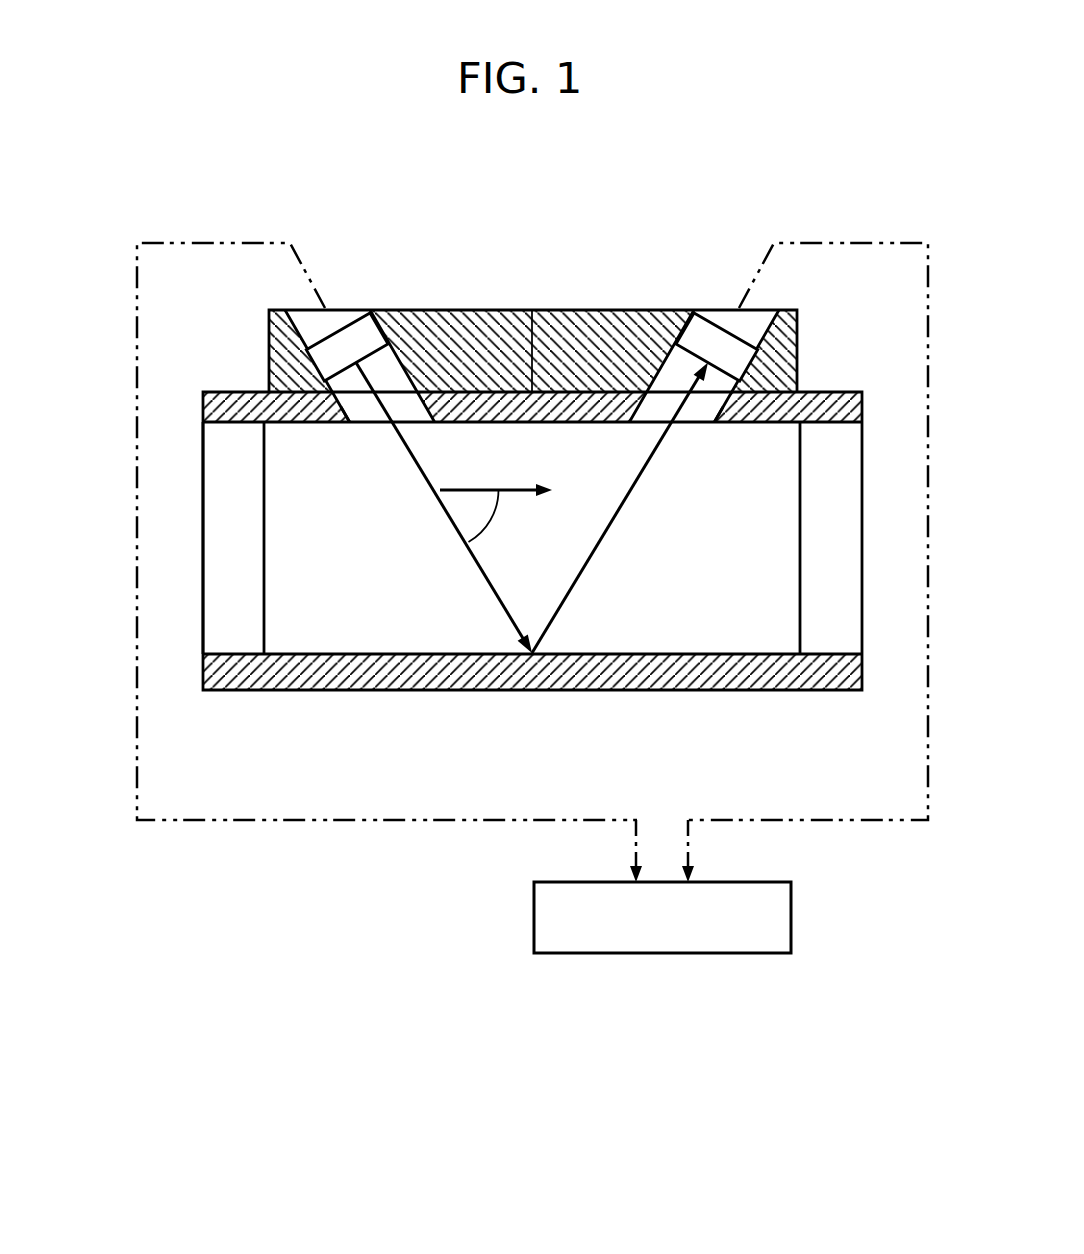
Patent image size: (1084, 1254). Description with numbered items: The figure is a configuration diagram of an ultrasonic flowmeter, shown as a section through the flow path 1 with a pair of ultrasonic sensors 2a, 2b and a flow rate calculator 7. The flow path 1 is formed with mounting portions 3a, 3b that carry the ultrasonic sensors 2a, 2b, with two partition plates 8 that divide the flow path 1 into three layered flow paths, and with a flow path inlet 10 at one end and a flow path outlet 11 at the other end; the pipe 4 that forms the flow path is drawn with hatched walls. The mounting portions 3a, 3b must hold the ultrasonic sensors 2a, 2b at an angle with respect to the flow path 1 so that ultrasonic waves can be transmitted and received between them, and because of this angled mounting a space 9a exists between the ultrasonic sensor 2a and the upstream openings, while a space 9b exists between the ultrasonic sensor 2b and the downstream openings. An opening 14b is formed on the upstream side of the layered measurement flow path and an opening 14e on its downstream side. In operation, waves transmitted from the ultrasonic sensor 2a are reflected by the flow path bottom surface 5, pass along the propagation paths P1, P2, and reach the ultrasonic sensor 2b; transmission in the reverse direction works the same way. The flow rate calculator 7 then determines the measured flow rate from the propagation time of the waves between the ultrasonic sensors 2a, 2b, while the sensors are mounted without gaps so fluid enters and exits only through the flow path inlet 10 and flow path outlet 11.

The flow path 1 is at (290, 537).
The ultrasonic sensor 2a is at (355, 310).
The ultrasonic sensor 2b is at (709, 310).
The mounting portion 3a is at (297, 310).
The mounting portion 3b is at (767, 310).
The pipe 4 is at (313, 423).
The flow path bottom surface 5 is at (313, 657).
The flow rate calculator 7 is at (642, 953).
The partition plate 8 is at (264, 492).
The space 9a is at (390, 375).
The space 9b is at (677, 377).
The flow path inlet 10 is at (203, 445).
The flow path outlet 11 is at (861, 535).
The opening 14b is at (375, 412).
The opening 14e is at (700, 412).
The propagation path P1 is at (483, 577).
The propagation path P2 is at (598, 543).